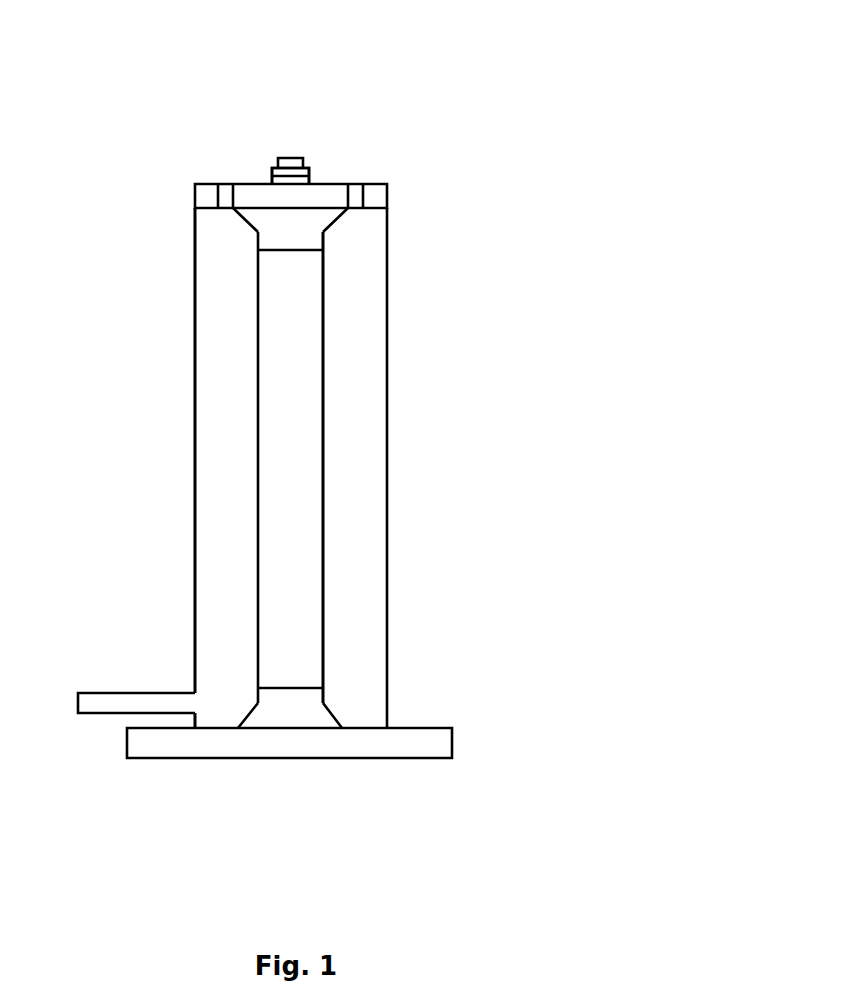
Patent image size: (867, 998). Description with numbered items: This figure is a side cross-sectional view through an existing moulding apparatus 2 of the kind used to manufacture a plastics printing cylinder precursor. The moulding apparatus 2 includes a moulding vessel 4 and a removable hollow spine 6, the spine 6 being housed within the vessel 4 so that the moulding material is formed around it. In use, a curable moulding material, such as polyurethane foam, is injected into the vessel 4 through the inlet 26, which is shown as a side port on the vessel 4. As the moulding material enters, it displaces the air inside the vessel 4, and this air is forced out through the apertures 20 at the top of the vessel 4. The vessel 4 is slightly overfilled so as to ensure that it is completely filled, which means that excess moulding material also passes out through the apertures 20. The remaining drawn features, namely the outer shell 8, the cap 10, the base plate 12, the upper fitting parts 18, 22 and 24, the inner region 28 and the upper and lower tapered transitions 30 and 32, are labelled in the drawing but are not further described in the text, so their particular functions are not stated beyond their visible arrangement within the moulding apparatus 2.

The moulding apparatus 2 is at (180, 419).
The moulding vessel 4 is at (192, 289).
The removable hollow spine 6 is at (331, 351).
The outer shell 8 is at (387, 553).
The cap 10 is at (325, 184).
The base plate 12 is at (408, 766).
The connector stem 18 is at (290, 158).
The apertures 20 is at (357, 184).
The fitting body 22 is at (272, 170).
The fitting flange 24 is at (270, 183).
The inlet 26 is at (137, 693).
The inner chamber 28 is at (325, 463).
The upper tapered transition 30 is at (340, 222).
The lower tapered transition 32 is at (337, 713).